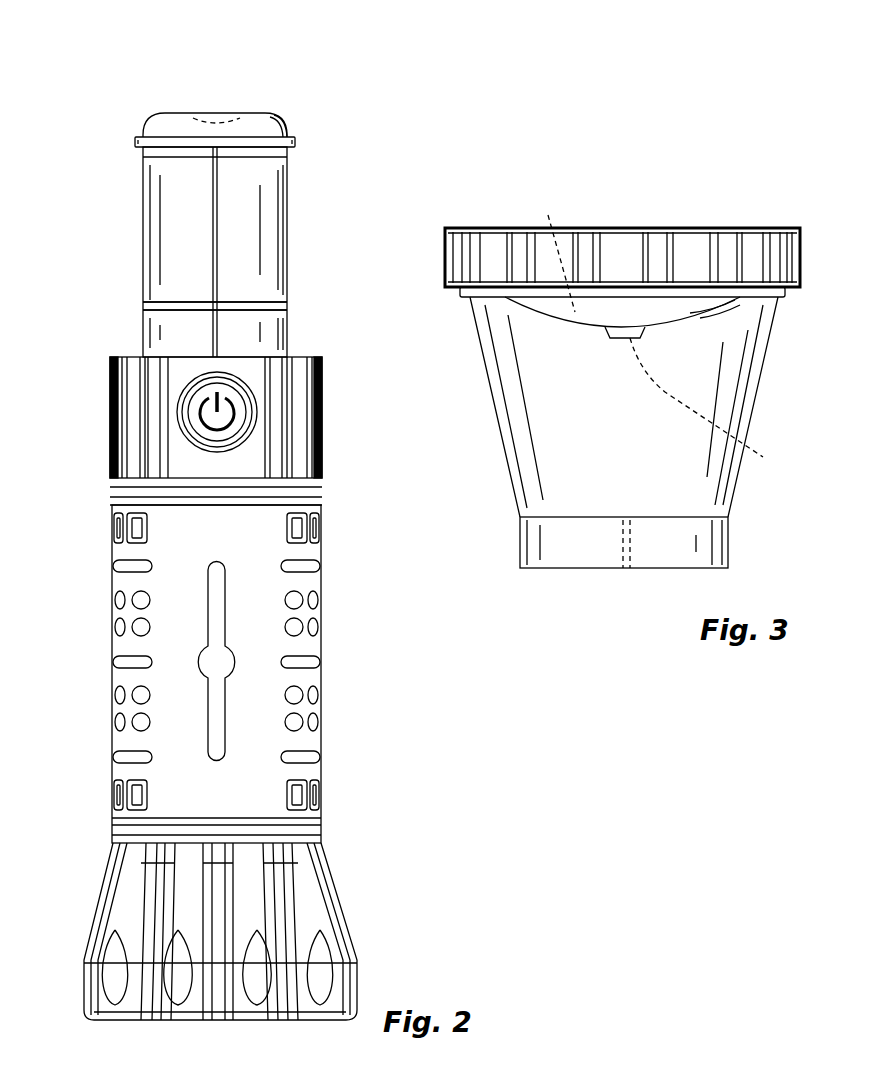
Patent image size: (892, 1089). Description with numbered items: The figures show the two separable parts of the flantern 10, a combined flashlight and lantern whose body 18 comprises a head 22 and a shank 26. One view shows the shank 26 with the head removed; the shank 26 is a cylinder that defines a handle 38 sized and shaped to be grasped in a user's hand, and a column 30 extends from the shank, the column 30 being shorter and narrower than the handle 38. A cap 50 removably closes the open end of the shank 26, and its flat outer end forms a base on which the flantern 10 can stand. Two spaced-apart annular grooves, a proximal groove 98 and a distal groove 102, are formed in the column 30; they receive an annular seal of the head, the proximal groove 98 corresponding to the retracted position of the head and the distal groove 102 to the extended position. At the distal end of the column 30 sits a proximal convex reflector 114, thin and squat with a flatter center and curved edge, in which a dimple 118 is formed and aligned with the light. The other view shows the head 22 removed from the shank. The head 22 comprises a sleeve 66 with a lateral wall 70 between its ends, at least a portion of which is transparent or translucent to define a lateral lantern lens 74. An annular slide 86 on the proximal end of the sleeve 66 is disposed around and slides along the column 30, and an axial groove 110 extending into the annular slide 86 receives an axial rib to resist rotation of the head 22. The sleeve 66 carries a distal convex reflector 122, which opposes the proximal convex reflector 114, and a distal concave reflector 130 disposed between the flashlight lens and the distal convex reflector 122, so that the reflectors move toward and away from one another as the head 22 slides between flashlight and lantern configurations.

In FIG. 2, the flantern 10 is at (78, 834).
In FIG. 2, the body 18 is at (112, 602).
In FIG. 3, the head 22 is at (800, 262).
In FIG. 2, the shank 26 is at (112, 733).
In FIG. 2, the column 30 is at (195, 256).
In FIG. 2, the handle 38 is at (320, 648).
In FIG. 2, the cap 50 is at (333, 886).
In FIG. 3, the sleeve 66 is at (773, 355).
In FIG. 3, the lateral wall 70 is at (483, 383).
In FIG. 3, the lateral lantern lens 74 is at (508, 487).
In FIG. 3, the annular slide 86 is at (520, 532).
In FIG. 2, the proximal groove 98 is at (288, 310).
In FIG. 2, the distal groove 102 is at (290, 158).
In FIG. 2, the axial groove 110 is at (212, 205).
In FIG. 3, the axial groove 110 is at (630, 547).
In FIG. 2, the proximal convex reflector 114 is at (170, 125).
In FIG. 2, the dimple 118 is at (214, 112).
In FIG. 3, the distal convex reflector 122 is at (555, 253).
In FIG. 3, the distal concave reflector 130 is at (716, 409).